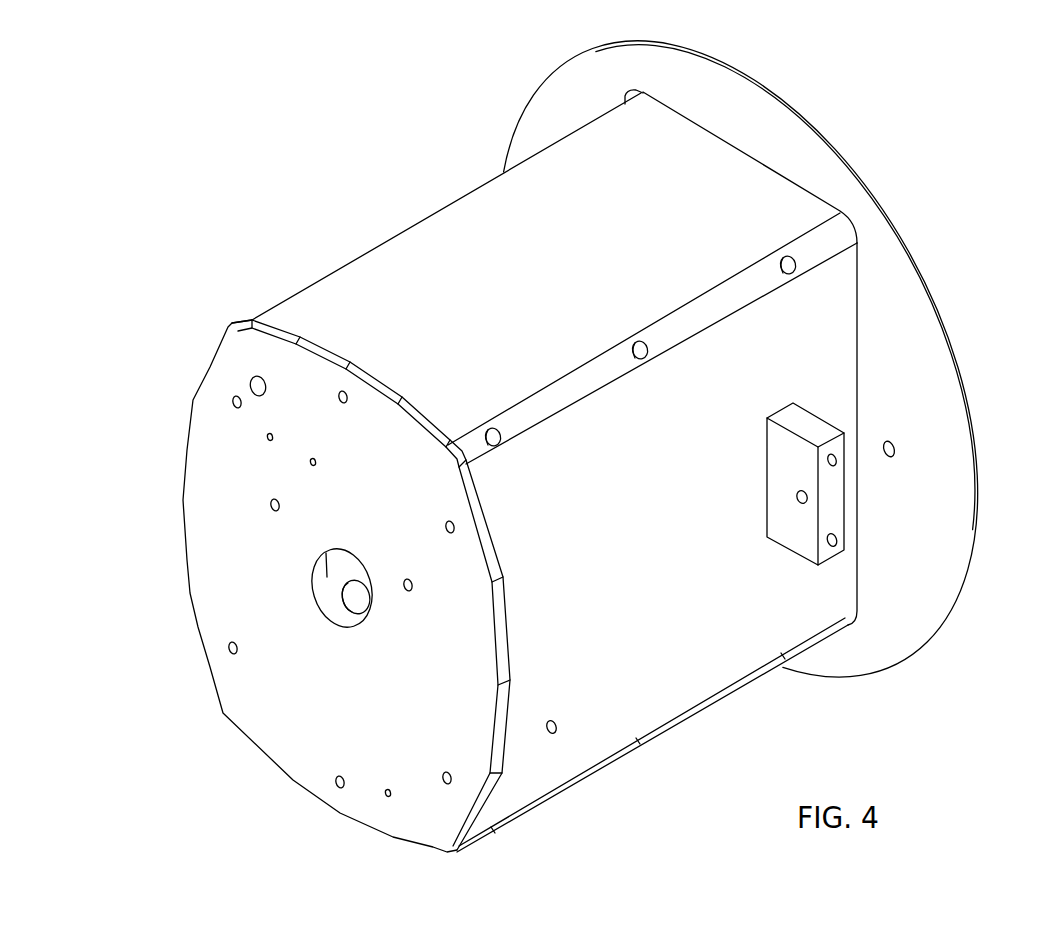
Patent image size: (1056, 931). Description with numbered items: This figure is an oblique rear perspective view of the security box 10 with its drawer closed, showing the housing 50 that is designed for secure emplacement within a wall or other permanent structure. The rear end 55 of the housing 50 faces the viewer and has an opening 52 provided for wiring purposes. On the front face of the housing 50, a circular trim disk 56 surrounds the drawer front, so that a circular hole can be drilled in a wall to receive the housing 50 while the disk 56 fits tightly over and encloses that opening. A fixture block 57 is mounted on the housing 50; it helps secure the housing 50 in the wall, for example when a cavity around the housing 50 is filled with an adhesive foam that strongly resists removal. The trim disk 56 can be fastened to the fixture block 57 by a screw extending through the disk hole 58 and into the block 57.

The security box 10 is at (292, 130).
The housing 50 is at (617, 728).
The opening 52 is at (313, 575).
The rear end 55 is at (257, 715).
The trim disk 56 is at (933, 380).
The fixture block 57 is at (833, 508).
The disk hole 58 is at (893, 450).